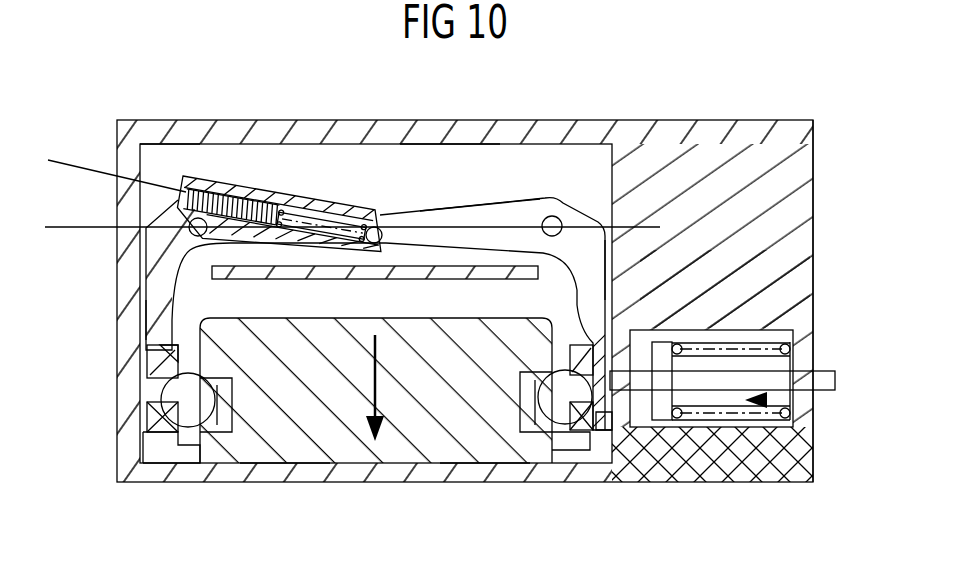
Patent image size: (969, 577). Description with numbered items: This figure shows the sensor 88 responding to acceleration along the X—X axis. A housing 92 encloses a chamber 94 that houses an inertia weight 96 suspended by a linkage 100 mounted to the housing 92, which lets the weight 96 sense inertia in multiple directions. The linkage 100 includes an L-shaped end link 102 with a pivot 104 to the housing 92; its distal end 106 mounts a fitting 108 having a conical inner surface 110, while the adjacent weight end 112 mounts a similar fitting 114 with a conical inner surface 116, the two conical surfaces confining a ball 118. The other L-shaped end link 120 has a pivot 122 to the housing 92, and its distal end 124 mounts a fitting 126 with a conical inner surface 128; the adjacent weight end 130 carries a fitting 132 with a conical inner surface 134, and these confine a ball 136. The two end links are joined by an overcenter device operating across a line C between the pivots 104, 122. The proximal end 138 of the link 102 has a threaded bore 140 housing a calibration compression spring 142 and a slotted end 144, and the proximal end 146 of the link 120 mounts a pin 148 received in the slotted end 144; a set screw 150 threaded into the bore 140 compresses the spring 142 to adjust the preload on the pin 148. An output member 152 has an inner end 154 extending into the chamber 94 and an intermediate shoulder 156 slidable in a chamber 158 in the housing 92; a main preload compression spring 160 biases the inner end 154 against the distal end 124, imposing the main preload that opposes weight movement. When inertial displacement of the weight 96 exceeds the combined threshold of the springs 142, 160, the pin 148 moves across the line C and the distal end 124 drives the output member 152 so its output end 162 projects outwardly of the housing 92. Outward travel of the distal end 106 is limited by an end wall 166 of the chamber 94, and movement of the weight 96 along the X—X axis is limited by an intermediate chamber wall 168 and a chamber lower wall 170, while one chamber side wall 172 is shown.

The sensor 88 is at (822, 150).
The housing 92 is at (737, 135).
The chamber 94 is at (160, 172).
The inertia weight 96 is at (395, 452).
The linkage 100 is at (450, 168).
The L-shaped end link 102 is at (155, 265).
The pivot 104 is at (178, 207).
The distal end 106 is at (170, 350).
The fitting 108 is at (178, 408).
The conical inner surface 110 is at (152, 382).
The weight end 112 is at (160, 318).
The fitting 114 is at (203, 450).
The conical inner surface 116 is at (190, 445).
The ball 118 is at (148, 430).
The L-shaped end link 120 is at (612, 264).
The pivot 122 is at (550, 216).
The distal end 124 is at (683, 290).
The fitting 126 is at (612, 430).
The conical inner surface 128 is at (587, 430).
The weight end 130 is at (473, 447).
The fitting 132 is at (533, 447).
The conical inner surface 134 is at (553, 440).
The ball 136 is at (563, 427).
The proximal end 138 is at (312, 210).
The threaded bore 140 is at (186, 176).
The calibration compression spring 142 is at (354, 212).
The slotted end 144 is at (398, 220).
The proximal end 146 is at (528, 210).
The pin 148 is at (382, 218).
The set screw 150 is at (262, 193).
The output member 152 is at (790, 370).
The inner end 154 is at (672, 420).
The intermediate shoulder 156 is at (765, 428).
The chamber 158 is at (790, 402).
The main preload compression spring 160 is at (790, 345).
The output end 162 is at (835, 382).
The end wall 166 is at (148, 453).
The intermediate chamber wall 168 is at (212, 272).
The chamber lower wall 170 is at (287, 453).
The chamber side wall 172 is at (145, 485).
The line C is at (341, 226).